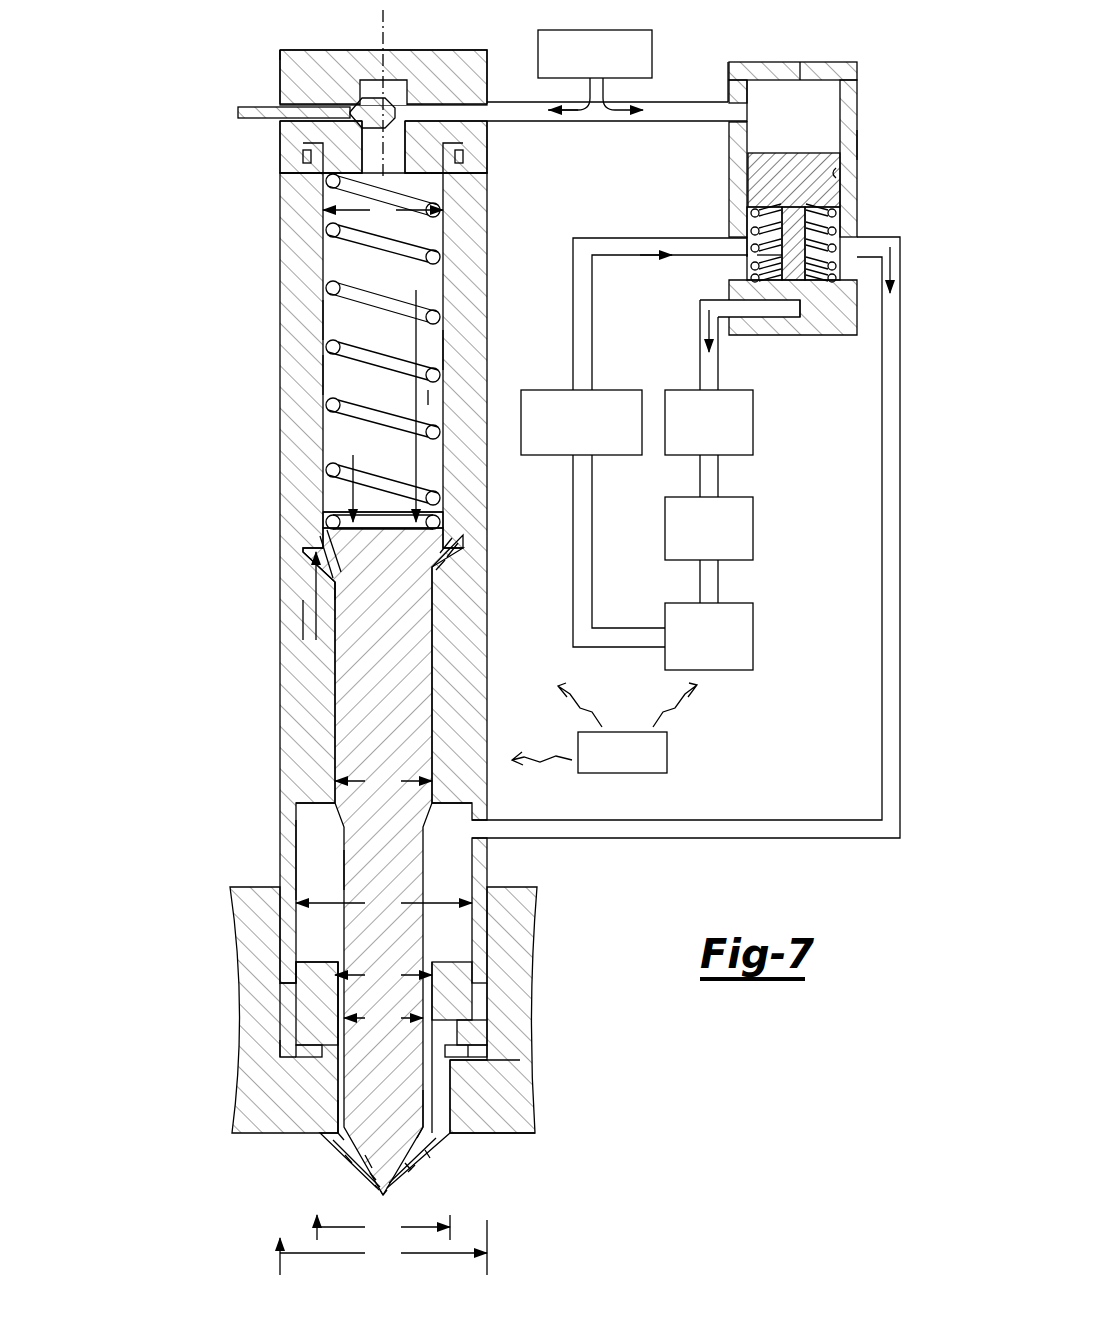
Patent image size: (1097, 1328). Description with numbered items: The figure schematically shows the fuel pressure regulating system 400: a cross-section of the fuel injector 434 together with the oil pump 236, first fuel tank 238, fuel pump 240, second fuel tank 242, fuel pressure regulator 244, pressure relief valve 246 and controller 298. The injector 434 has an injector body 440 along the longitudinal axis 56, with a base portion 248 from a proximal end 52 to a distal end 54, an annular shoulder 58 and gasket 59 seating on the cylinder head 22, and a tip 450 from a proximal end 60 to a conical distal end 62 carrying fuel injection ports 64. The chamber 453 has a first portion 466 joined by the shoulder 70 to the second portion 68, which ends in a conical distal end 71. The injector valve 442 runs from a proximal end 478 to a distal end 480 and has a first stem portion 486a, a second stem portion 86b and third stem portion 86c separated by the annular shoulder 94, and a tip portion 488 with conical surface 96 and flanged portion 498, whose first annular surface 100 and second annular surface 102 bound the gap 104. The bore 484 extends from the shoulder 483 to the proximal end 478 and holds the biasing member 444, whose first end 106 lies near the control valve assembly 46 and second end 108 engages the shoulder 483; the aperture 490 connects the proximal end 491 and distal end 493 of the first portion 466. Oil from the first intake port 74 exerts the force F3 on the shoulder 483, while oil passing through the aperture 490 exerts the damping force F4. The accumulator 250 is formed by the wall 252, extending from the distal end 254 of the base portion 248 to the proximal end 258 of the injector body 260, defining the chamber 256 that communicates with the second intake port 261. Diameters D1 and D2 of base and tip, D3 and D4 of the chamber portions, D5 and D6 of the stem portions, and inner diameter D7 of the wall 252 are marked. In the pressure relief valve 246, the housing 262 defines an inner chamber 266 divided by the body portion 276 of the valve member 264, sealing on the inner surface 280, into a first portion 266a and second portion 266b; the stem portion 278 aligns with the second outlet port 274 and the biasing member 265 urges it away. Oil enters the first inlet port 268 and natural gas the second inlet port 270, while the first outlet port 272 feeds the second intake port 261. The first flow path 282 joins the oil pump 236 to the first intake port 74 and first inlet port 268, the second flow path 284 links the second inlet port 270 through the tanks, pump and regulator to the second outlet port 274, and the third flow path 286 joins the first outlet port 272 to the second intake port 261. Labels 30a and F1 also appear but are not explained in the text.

The cylinder head 22 is at (520, 1100).
The injection orifice 30a is at (338, 1108).
The control valve assembly 46 is at (238, 112).
The proximal end 52 is at (302, 135).
The distal end 54 is at (278, 1055).
The longitudinal axis 56 is at (380, 35).
The annular shoulder 58 is at (465, 1020).
The gasket 59 is at (307, 1045).
The proximal end 60 is at (458, 1067).
The distal end 62 is at (387, 1197).
The fuel injection ports 64 is at (348, 1160).
The second portion 68 is at (487, 1080).
The annular shoulder 70 is at (333, 567).
The distal end 71 is at (377, 1188).
The first intake port 74 is at (492, 128).
The second stem portion 86b is at (420, 600).
The third stem portion 86c is at (350, 875).
The annular shoulder 94 is at (313, 850).
The conically shaped surface 96 is at (373, 1177).
The first annular surface 100 is at (427, 1157).
The second annular surface 102 is at (340, 1153).
The gap 104 is at (428, 1098).
The first end 106 is at (330, 181).
The second end 108 is at (320, 520).
The oil pump 236 is at (656, 38).
The first fuel tank 238 is at (758, 412).
The fuel pump 240 is at (758, 518).
The second fuel tank 242 is at (731, 677).
The fuel pressure regulator 244 is at (549, 461).
The pressure relief valve 246 is at (792, 197).
The base portion 248 is at (303, 622).
The accumulator 250 is at (267, 878).
The wall 252 is at (489, 868).
The distal end 254 is at (330, 805).
The chamber 256 is at (305, 830).
The proximal end 258 is at (457, 960).
The injector body 260 is at (493, 1007).
The second intake port 261 is at (470, 826).
The housing 262 is at (860, 145).
The valve member 264 is at (822, 148).
The biasing member 265 is at (830, 213).
The inner chamber 266 is at (762, 108).
The first portion 266a is at (820, 72).
The second portion 266b is at (757, 262).
The first inlet port 268 is at (738, 106).
The second inlet port 270 is at (748, 242).
The first outlet port 272 is at (779, 307).
The second outlet port 274 is at (800, 300).
The body portion 276 is at (740, 172).
The stem portion 278 is at (790, 275).
The inner surface 280 is at (838, 173).
The first flow path 282 is at (547, 100).
The second flow path 284 is at (572, 302).
The third flow path 286 is at (876, 640).
The controller 298 is at (690, 758).
The fuel pressure regulating system 400 is at (162, 215).
The fuel injector 434 is at (277, 83).
The injector body 440 is at (288, 422).
The injector valve 442 is at (425, 925).
The biasing member 444 is at (327, 285).
The tip 450 is at (410, 1167).
The chamber 453 is at (338, 1112).
The first portion 466 is at (330, 320).
The proximal end 478 is at (468, 205).
The distal end 480 is at (383, 1193).
The shoulder 483 is at (455, 560).
The bore 484 is at (325, 360).
The first stem portion 486a is at (456, 345).
The tip portion 488 is at (370, 1167).
The aperture 490 is at (316, 540).
The proximal end 491 is at (428, 397).
The distal end 493 is at (440, 567).
The flanged portion 498 is at (420, 1143).
The spring force F1 is at (414, 392).
The force F3 is at (351, 475).
The force F4 is at (316, 590).
The diameter D1 is at (383, 1247).
The diameter D2 is at (383, 1227).
The diameter D3 is at (383, 210).
The diameter D4 is at (383, 975).
The diameter D5 is at (383, 781).
The diameter D6 is at (383, 1018).
The inner diameter D7 is at (384, 903).